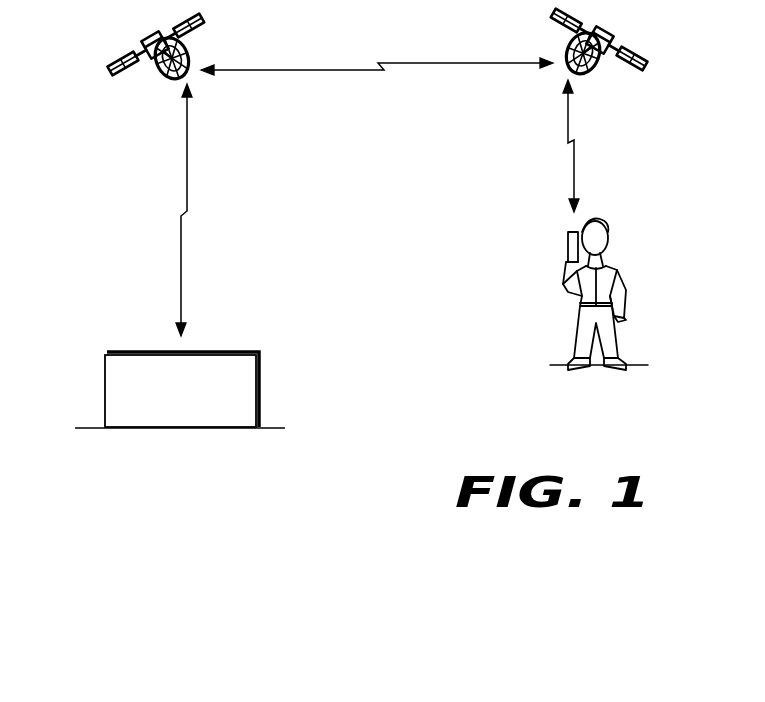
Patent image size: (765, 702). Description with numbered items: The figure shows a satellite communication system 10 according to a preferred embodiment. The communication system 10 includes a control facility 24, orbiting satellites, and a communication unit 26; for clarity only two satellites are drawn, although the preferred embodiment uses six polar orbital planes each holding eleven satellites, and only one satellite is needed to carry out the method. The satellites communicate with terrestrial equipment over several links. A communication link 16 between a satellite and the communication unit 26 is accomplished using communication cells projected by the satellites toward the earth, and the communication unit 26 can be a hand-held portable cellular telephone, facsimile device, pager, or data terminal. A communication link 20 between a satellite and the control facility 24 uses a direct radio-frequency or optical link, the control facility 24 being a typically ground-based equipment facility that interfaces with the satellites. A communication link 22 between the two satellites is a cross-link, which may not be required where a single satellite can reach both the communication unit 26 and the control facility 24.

The satellite communication system 10 is at (439, 442).
The communication link 16 is at (577, 167).
The communication link 20 is at (178, 228).
The communication link 22 is at (404, 62).
The control facility 24 is at (105, 390).
The communication unit 26 is at (568, 240).